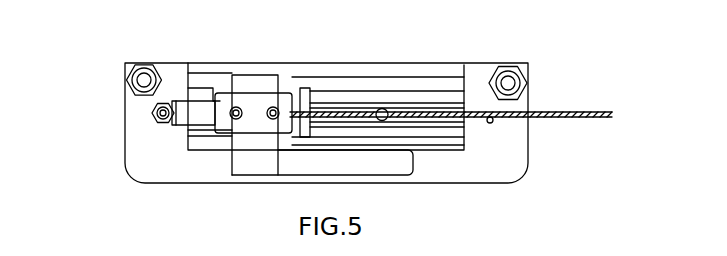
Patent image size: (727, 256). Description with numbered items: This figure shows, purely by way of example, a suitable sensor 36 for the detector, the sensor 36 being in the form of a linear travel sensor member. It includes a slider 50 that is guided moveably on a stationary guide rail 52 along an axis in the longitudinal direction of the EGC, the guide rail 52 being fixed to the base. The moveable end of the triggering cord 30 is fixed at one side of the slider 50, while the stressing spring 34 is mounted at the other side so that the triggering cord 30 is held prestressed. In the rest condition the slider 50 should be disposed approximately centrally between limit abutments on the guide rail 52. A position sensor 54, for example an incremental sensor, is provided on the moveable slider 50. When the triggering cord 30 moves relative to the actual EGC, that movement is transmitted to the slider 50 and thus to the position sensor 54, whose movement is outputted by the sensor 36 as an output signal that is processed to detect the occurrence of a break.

The triggering cord 30 is at (589, 112).
The stressing spring 34 is at (183, 108).
The sensor 36 is at (100, 60).
The slider 50 is at (295, 108).
The guide rail 52 is at (320, 110).
The position sensor 54 is at (233, 158).